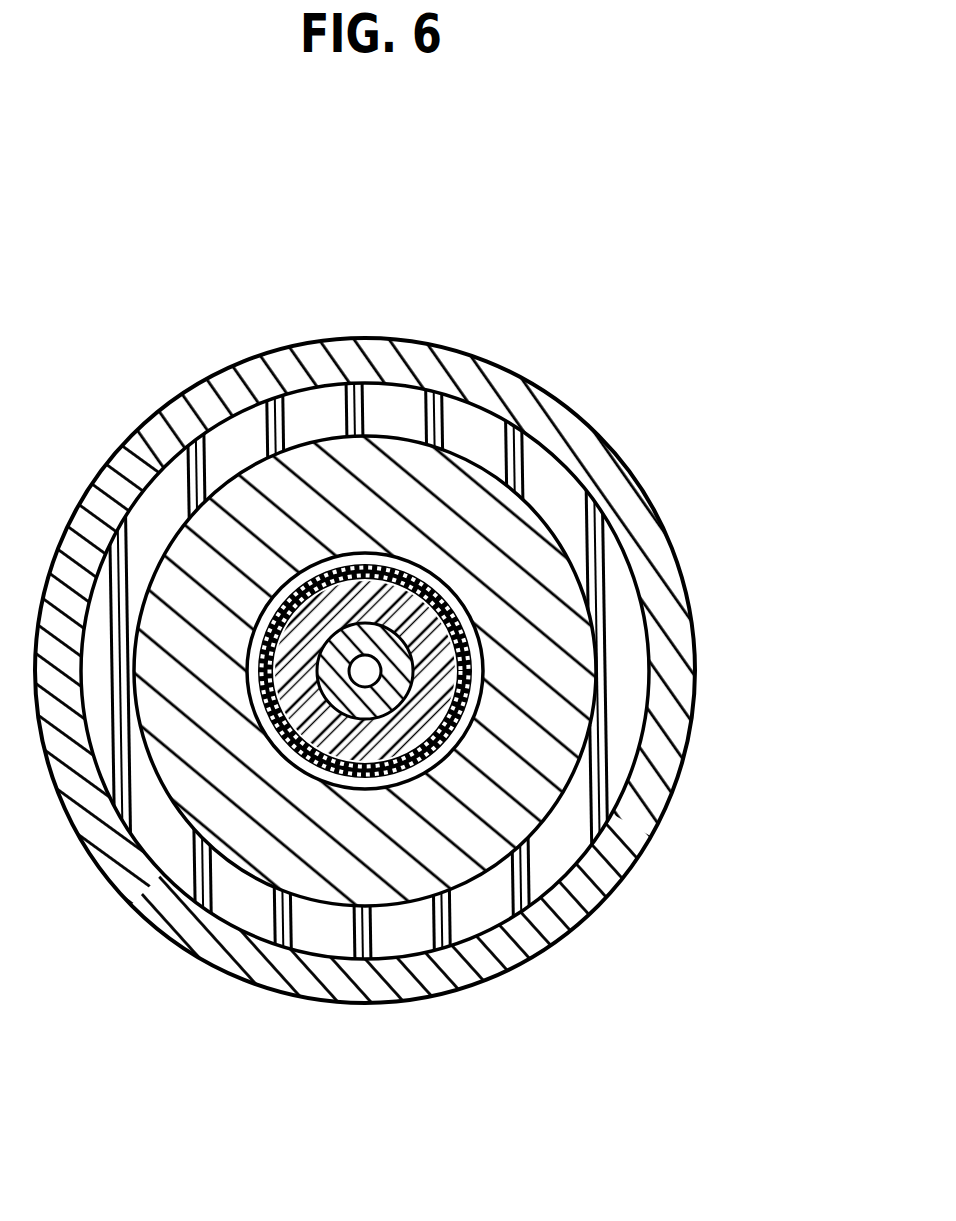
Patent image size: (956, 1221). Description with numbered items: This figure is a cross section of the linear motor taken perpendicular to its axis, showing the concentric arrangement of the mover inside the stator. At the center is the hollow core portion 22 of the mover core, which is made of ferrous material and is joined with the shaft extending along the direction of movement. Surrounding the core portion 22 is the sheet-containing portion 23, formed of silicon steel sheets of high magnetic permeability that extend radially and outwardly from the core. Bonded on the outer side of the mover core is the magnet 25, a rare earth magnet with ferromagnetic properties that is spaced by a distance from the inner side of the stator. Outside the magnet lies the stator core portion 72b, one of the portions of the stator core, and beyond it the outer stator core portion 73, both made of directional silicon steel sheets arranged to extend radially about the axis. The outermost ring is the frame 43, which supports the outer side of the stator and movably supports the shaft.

The core portion 22 is at (388, 695).
The sheet-containing portion 23 is at (425, 702).
The magnet 25 is at (467, 690).
The stator core portion 72b is at (530, 567).
The outer stator core portion 73 is at (547, 473).
The frame 43 is at (432, 367).